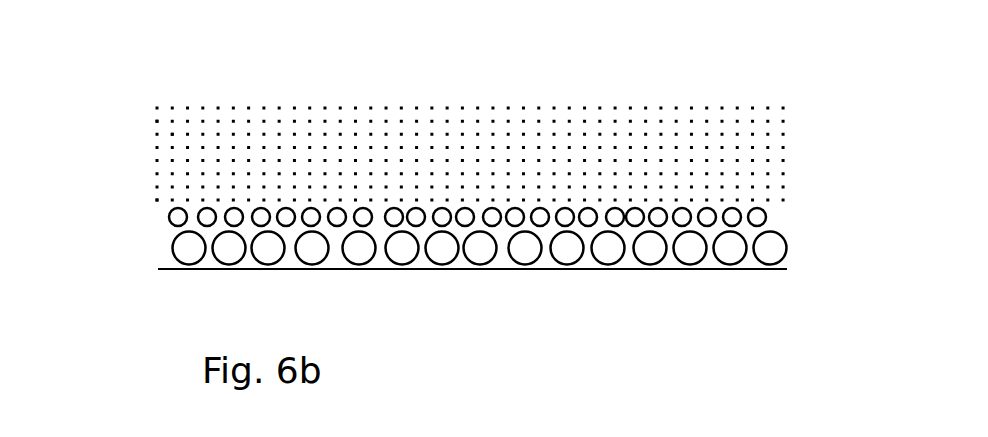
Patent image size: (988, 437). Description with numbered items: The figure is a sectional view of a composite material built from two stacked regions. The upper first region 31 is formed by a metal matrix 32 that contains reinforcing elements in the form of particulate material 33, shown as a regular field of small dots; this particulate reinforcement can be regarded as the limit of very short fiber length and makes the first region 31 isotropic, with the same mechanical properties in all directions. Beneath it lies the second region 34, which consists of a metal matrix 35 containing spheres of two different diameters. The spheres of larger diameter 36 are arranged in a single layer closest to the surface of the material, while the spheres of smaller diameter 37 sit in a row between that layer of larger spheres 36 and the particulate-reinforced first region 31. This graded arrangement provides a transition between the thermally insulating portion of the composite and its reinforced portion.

The first region 31 is at (470, 127).
The metal matrix 32 is at (515, 102).
The particulate material 33 is at (176, 140).
The second region 34 is at (519, 270).
The metal matrix 35 is at (160, 235).
The spheres of larger diameter 36 is at (607, 252).
The spheres of smaller diameter 37 is at (567, 218).